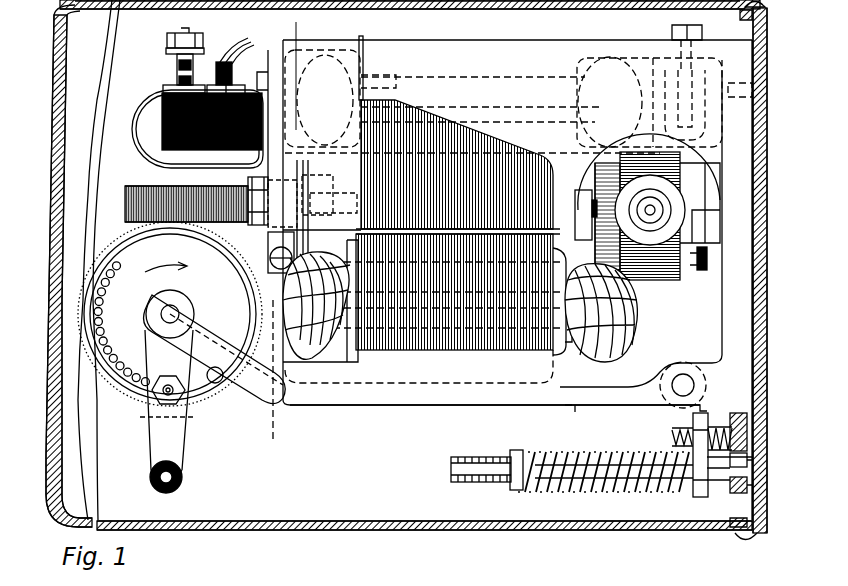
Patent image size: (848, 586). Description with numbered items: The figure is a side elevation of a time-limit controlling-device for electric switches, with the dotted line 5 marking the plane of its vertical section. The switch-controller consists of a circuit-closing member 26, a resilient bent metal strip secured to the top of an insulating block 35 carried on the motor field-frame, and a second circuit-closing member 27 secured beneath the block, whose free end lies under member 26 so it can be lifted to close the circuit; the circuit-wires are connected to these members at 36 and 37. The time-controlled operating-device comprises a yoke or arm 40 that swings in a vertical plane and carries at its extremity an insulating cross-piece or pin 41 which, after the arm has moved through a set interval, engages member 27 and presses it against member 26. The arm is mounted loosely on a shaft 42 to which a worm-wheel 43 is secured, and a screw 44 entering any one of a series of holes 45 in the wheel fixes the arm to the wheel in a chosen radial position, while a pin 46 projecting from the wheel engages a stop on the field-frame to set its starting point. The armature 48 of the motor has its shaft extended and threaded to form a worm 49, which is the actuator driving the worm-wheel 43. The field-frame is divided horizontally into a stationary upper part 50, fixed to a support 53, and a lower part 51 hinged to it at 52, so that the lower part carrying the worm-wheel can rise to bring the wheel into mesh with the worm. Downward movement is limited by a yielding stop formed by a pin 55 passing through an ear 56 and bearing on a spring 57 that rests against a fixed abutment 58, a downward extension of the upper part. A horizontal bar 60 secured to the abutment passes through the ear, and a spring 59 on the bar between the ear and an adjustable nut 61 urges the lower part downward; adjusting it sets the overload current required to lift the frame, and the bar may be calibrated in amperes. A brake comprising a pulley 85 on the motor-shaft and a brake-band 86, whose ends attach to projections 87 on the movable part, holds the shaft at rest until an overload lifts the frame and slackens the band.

The section line 5— 5 is at (284, 233).
The circuit-closing member 26 is at (178, 63).
The circuit-closing member 27 is at (138, 147).
The block 35 is at (198, 121).
The circuit-wire connection 36 is at (168, 44).
The circuit-wire connection 37 is at (236, 75).
The yoke or arm 40 is at (178, 450).
The cross-piece or pin 41 is at (185, 478).
The shaft 42 is at (176, 316).
The worm-wheel 43 is at (216, 392).
The screw 44 is at (164, 398).
The holes 45 is at (106, 289).
The pin 46 is at (215, 367).
The armature 48 is at (336, 161).
The worm 49 is at (128, 200).
The upper part of field-frame 50 is at (446, 40).
The lower part of field-frame 51 is at (400, 407).
The hinge 52 is at (680, 389).
The support 53 is at (762, 153).
The pin 55 is at (672, 437).
The ear 56 is at (692, 421).
The spring 57 is at (747, 461).
The fixed abutment 58 is at (747, 485).
The spring 59 is at (640, 490).
The bar 60 is at (453, 472).
The nut 61 is at (638, 334).
The pulley 85 is at (313, 182).
The brake-band 86 is at (322, 232).
The projections 87 is at (305, 290).